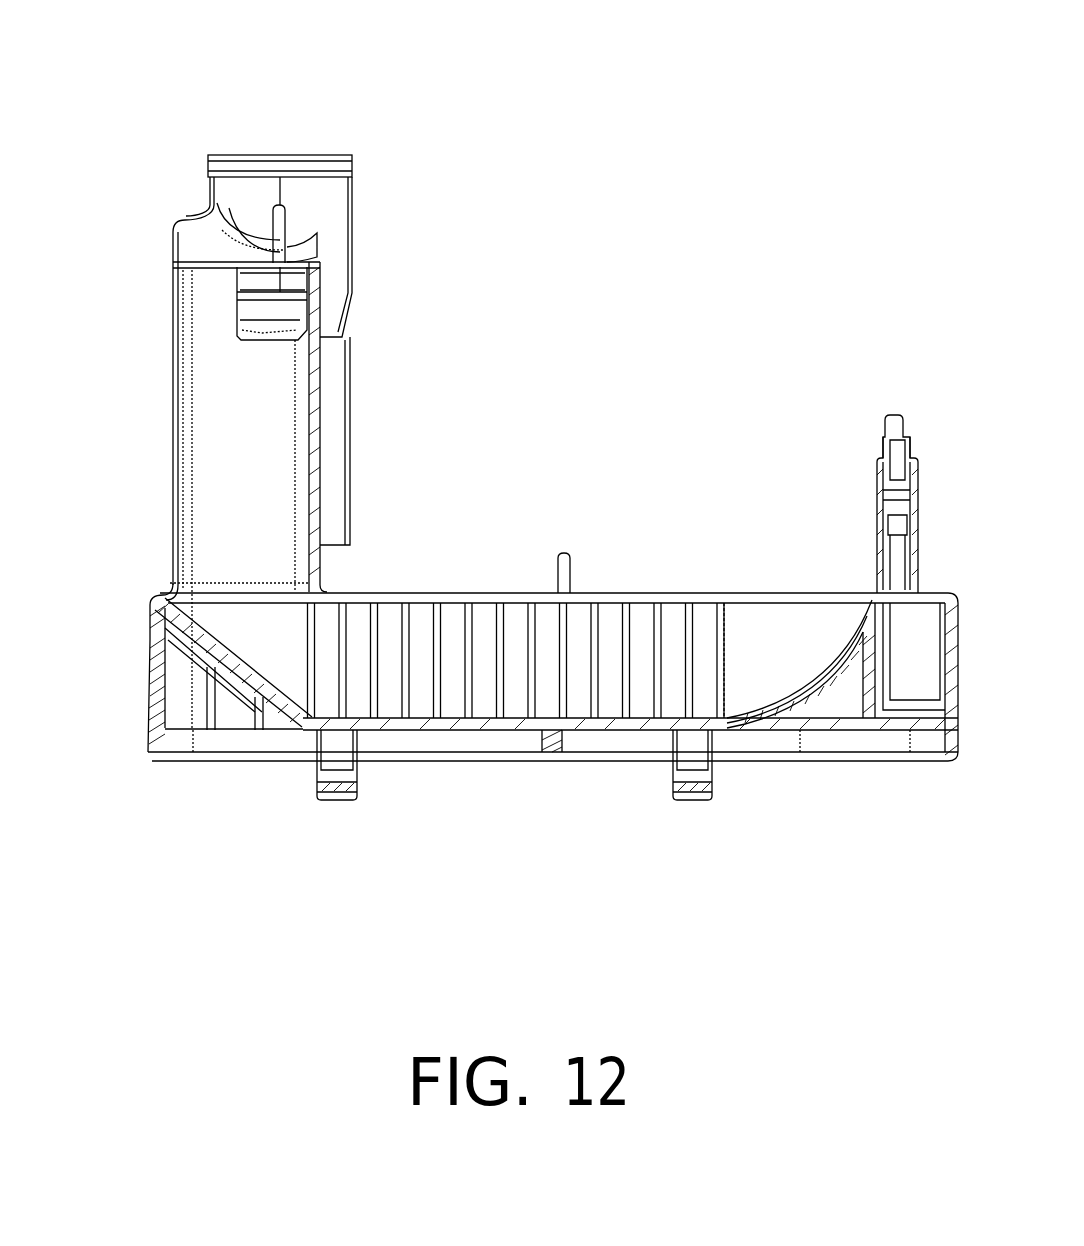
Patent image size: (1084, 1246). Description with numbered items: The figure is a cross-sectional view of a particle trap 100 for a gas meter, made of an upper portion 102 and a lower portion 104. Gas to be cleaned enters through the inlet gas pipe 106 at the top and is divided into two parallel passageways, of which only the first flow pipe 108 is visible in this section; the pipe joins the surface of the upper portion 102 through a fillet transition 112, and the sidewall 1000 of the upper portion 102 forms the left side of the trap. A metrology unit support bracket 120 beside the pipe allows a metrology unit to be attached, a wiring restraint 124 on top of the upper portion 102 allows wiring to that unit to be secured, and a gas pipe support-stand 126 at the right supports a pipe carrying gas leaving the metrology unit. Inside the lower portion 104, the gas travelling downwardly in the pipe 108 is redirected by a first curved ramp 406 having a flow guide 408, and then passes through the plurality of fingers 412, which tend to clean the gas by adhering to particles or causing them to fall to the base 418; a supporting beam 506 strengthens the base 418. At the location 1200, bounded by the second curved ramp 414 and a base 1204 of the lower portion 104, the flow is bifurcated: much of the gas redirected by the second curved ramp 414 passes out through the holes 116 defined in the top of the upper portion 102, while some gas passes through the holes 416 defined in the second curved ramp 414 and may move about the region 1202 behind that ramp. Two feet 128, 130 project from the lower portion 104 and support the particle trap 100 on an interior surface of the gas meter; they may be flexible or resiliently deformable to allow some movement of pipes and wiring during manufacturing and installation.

The particle trap 100 is at (731, 72).
The upper portion 102 is at (450, 356).
The lower portion 104 is at (172, 858).
The gas pipe 106 is at (235, 160).
The first flow pipe 108 is at (175, 445).
The fillet transition 112 is at (168, 594).
The holes 116 is at (685, 592).
The metrology unit support bracket 120 is at (350, 390).
The wiring restraint 124 is at (563, 553).
The gas pipe support-stand 126 is at (888, 412).
The foot 128 is at (335, 803).
The foot 130 is at (692, 805).
The first curved ramp 406 is at (170, 618).
The flow guide 408 is at (208, 647).
The plurality of fingers 412 is at (562, 618).
The second curved ramp 414 is at (852, 633).
The holes 416 is at (833, 657).
The base 418 is at (495, 722).
The supporting beam 506 is at (552, 767).
The sidewall 1000 is at (152, 690).
The location 1200 is at (771, 637).
The region 1202 is at (844, 703).
The base 1204 is at (806, 732).